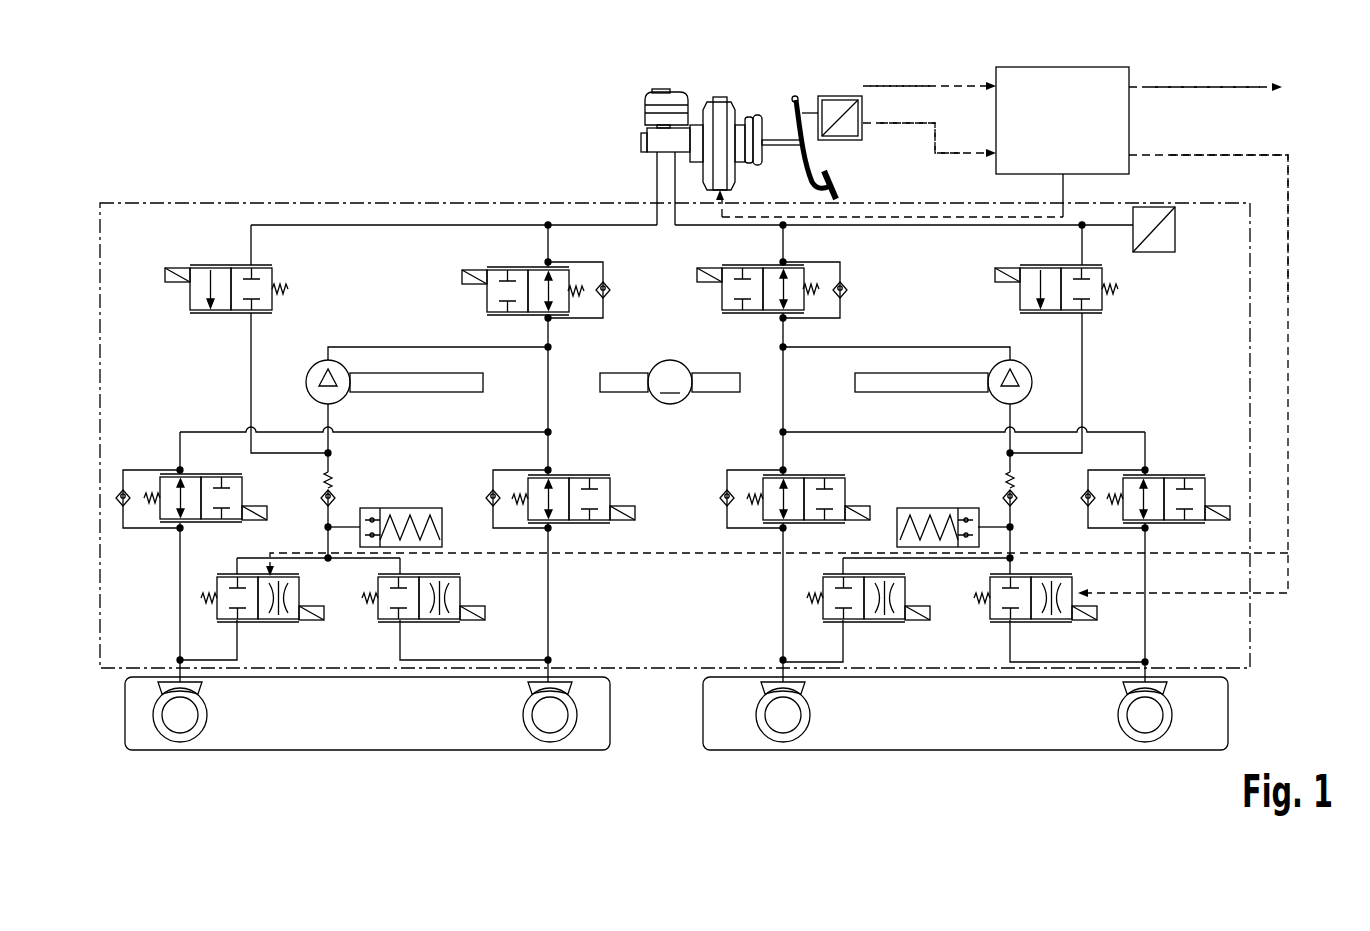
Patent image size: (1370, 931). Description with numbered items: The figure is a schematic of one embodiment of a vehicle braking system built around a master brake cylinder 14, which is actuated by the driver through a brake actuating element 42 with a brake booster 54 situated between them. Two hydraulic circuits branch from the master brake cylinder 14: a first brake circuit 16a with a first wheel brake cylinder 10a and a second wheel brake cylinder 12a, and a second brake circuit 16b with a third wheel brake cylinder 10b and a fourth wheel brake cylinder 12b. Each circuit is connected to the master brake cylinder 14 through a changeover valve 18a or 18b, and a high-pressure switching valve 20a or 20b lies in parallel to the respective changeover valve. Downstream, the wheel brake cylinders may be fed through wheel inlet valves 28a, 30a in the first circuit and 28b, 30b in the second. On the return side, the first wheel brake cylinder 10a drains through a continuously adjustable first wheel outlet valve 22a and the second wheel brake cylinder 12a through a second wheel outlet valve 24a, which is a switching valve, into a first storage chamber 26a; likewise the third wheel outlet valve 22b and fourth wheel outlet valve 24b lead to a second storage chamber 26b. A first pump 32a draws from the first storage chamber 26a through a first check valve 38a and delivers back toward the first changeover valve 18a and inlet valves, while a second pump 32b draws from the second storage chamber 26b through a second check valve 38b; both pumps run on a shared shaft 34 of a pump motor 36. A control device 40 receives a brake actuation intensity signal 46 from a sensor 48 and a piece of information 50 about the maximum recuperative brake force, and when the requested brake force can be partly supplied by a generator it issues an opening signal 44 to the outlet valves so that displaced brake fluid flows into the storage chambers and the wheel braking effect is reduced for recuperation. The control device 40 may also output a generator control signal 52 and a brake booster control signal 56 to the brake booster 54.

The first wheel brake cylinder 10a is at (1168, 688).
The third wheel brake cylinder 10b is at (203, 688).
The second wheel brake cylinder 12a is at (805, 688).
The fourth wheel brake cylinder 12b is at (572, 688).
The master brake cylinder 14 is at (642, 140).
The first brake circuit 16a is at (763, 567).
The second brake circuit 16b is at (558, 567).
The first changeover valve 18a is at (727, 268).
The second changeover valve 18b is at (492, 270).
The high-pressure switching valve 20a is at (1032, 268).
The high-pressure switching valve 20b is at (198, 268).
The first wheel outlet valve 22a is at (1040, 622).
The third wheel outlet valve 22b is at (262, 622).
The second wheel outlet valve 24a is at (875, 622).
The fourth wheel outlet valve 24b is at (433, 622).
The first storage chamber 26a is at (942, 508).
The second storage chamber 26b is at (393, 508).
The wheel inlet valve 28a is at (1168, 478).
The wheel inlet valve 28b is at (196, 477).
The wheel inlet valve 30a is at (822, 478).
The wheel inlet valve 30b is at (580, 478).
The first pump 32a is at (1026, 364).
The second pump 32b is at (318, 364).
The shared shaft 34 is at (924, 392).
The pump motor 36 is at (670, 360).
The first check valve 38a is at (1020, 504).
The second check valve 38b is at (338, 495).
The control device 40 is at (1063, 67).
The brake actuating element 42 is at (813, 158).
The opening signal 44 is at (1260, 155).
The brake actuation intensity signal 46 is at (958, 160).
The sensor 48 is at (840, 96).
The piece of information 50 is at (917, 86).
The generator control signal 52 is at (1199, 86).
The brake booster 54 is at (720, 97).
The brake booster control signal 56 is at (1063, 184).